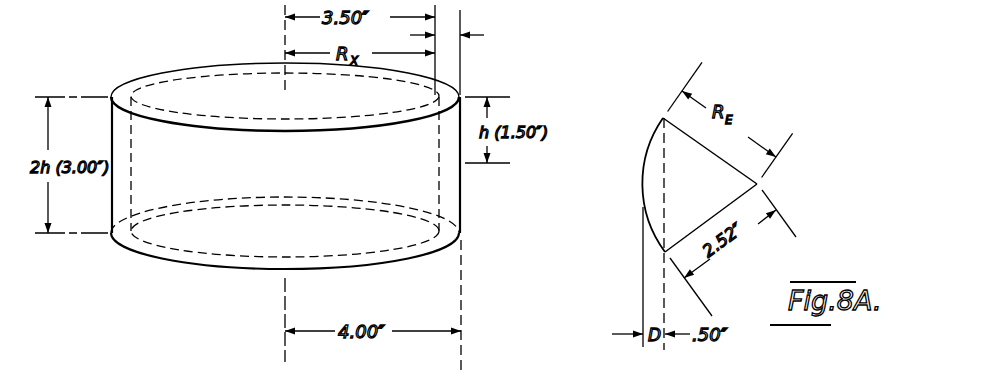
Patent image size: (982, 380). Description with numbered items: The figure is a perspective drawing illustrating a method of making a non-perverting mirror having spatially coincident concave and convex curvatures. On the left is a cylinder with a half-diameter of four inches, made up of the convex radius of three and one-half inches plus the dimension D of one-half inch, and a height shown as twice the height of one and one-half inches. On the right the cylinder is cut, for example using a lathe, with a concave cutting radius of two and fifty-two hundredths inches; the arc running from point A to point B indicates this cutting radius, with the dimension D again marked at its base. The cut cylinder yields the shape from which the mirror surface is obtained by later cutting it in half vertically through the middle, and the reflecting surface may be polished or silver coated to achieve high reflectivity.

The arc endpoint A is at (699, 168).
The arc endpoint B is at (711, 218).
The cylinder wall thickness dimension D is at (465, 35).